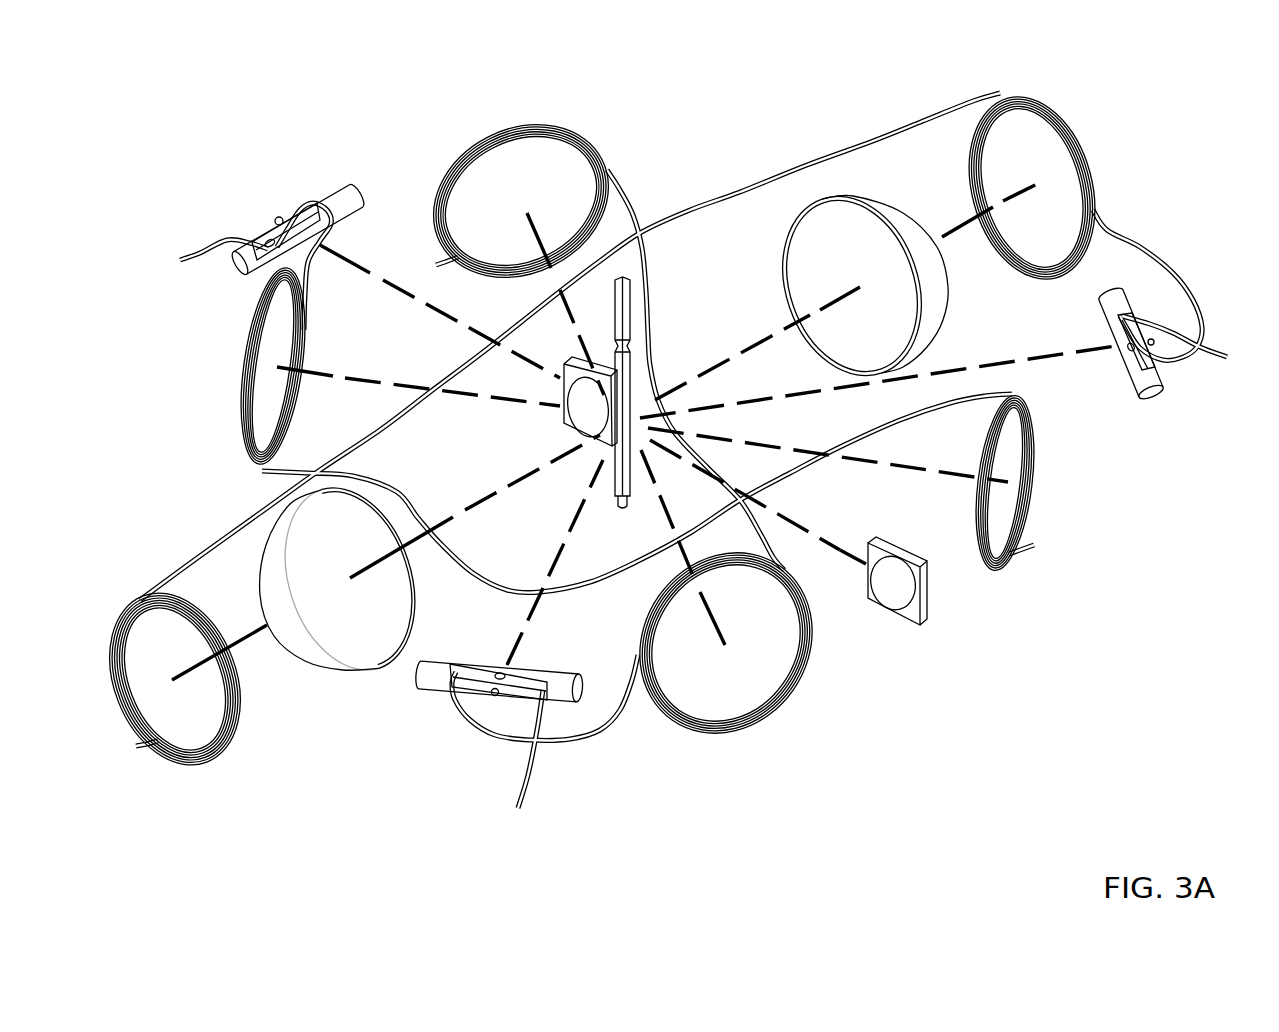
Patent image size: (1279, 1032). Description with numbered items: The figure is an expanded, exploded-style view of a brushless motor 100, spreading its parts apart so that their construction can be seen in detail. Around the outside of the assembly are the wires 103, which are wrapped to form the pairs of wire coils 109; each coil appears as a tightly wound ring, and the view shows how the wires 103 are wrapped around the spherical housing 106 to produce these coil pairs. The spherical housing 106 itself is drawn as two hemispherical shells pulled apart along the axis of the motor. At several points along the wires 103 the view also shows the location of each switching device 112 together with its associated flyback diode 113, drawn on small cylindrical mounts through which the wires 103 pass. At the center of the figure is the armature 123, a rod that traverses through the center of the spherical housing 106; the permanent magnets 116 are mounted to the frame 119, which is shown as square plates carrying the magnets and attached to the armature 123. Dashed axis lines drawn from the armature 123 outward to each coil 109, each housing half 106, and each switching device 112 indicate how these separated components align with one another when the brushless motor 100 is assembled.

The brushless motor 100 is at (1090, 752).
The wires 103 is at (230, 237).
The spherical housing 106 is at (960, 308).
The wire coils 109 is at (474, 133).
The switching device 112 is at (266, 239).
The flyback diode 113 is at (277, 216).
The permanent magnets 116 is at (742, 494).
The frame 119 is at (560, 423).
The armature 123 is at (635, 363).